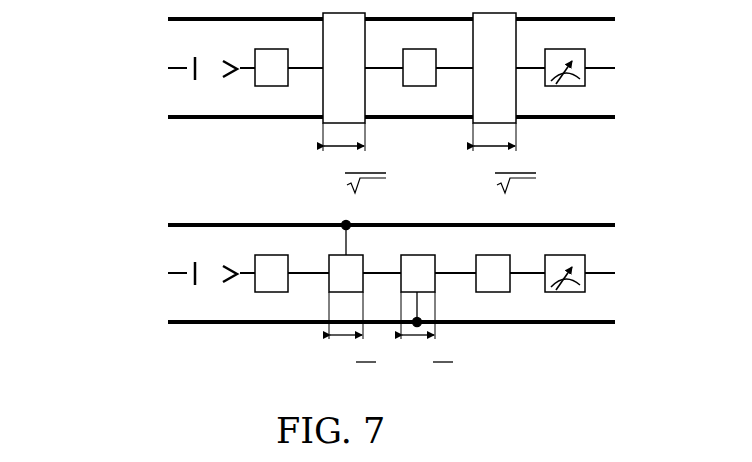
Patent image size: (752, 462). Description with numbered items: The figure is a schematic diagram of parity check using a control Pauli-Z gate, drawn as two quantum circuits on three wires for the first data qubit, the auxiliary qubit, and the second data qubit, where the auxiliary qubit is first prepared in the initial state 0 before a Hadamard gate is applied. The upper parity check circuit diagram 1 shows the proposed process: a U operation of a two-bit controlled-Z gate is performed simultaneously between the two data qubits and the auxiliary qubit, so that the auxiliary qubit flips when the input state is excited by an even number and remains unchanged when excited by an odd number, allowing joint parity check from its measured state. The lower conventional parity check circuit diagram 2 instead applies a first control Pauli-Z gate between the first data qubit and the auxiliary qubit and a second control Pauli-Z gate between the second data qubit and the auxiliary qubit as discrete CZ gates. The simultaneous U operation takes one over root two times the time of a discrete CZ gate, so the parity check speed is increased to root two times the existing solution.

The parity check circuit diagram 1 is at (336, 102).
The conventional parity check circuit diagram 2 is at (336, 299).
The initial |0 state preparation 0 is at (216, 171).